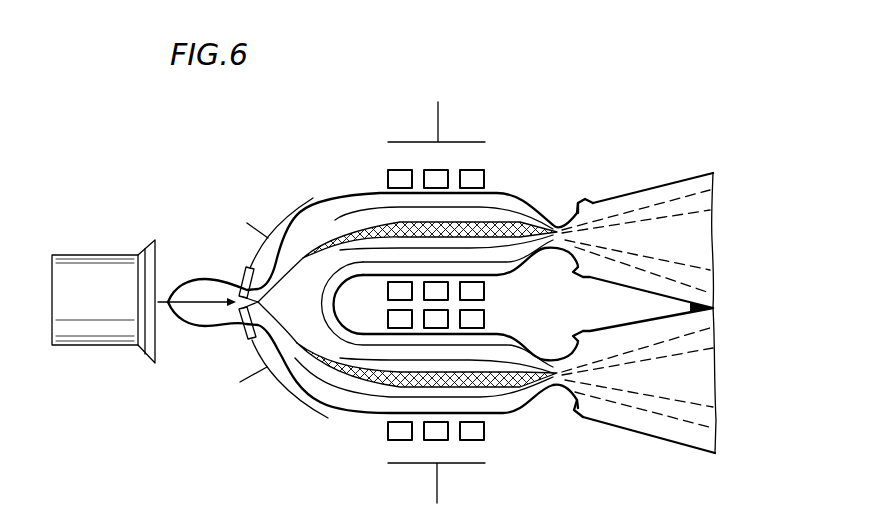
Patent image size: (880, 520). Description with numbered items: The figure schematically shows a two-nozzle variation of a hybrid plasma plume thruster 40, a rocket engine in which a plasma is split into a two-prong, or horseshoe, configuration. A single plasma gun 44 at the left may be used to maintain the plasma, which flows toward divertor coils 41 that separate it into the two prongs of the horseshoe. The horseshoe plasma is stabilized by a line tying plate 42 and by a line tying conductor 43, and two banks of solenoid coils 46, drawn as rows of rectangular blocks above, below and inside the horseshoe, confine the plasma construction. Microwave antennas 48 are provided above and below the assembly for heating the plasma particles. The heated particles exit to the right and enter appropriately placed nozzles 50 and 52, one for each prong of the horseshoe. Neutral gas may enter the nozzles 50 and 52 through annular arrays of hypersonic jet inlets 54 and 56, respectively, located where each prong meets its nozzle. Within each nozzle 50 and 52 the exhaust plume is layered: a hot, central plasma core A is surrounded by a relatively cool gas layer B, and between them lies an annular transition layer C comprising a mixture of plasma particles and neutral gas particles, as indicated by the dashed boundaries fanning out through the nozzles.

The hybrid plasma plume thruster 40 is at (203, 178).
The divertor coils 41 is at (241, 334).
The line tying plate 42 is at (198, 300).
The line tying conductor 43 is at (715, 312).
The plasma gun 44 is at (92, 255).
The solenoid coils 46 is at (484, 178).
The microwave antennas 48 is at (470, 142).
The nozzle 50 is at (657, 225).
The nozzle 52 is at (655, 436).
The hypersonic jet inlets 54 is at (587, 200).
The hypersonic jet inlets 56 is at (583, 418).
The central plasma core A is at (708, 240).
The gas layer B is at (715, 308).
The transition layer C is at (708, 282).